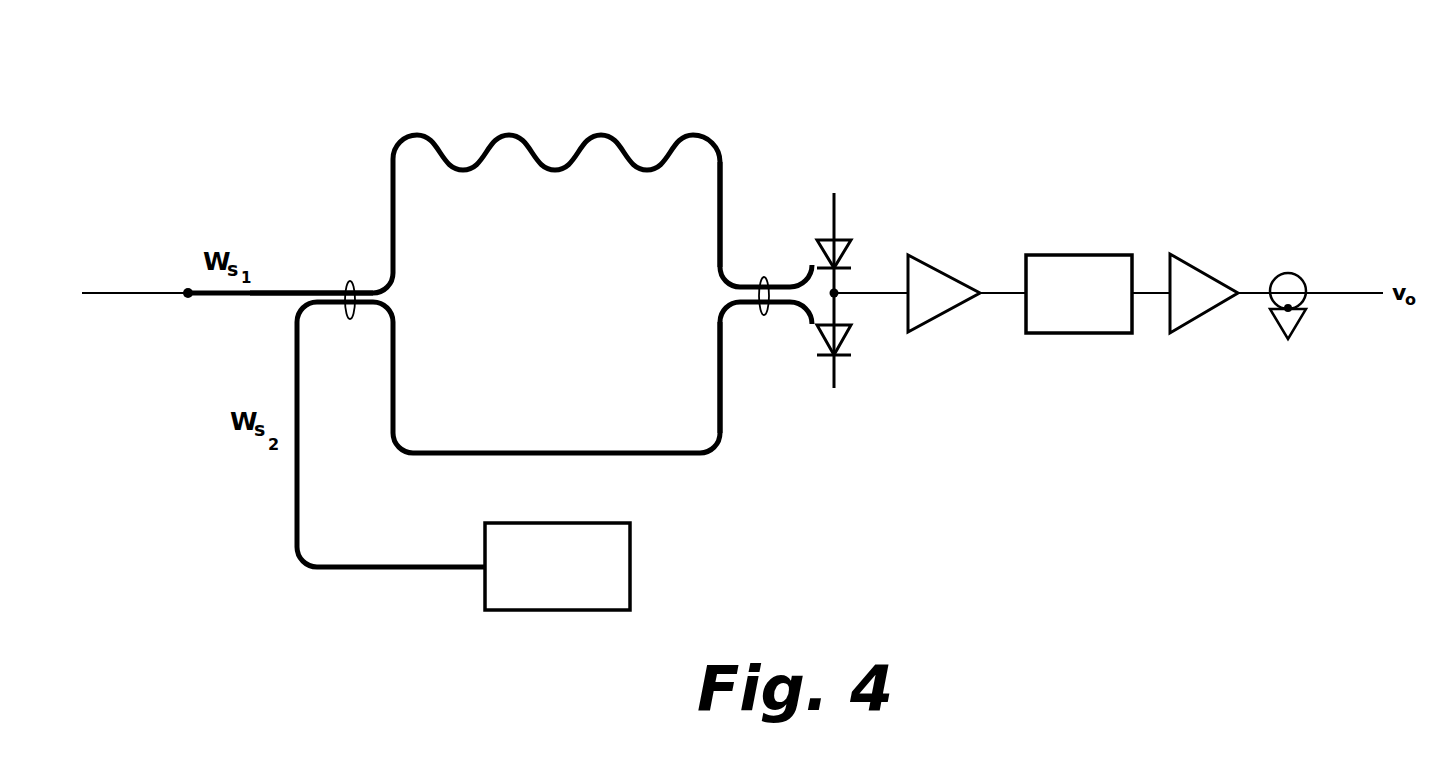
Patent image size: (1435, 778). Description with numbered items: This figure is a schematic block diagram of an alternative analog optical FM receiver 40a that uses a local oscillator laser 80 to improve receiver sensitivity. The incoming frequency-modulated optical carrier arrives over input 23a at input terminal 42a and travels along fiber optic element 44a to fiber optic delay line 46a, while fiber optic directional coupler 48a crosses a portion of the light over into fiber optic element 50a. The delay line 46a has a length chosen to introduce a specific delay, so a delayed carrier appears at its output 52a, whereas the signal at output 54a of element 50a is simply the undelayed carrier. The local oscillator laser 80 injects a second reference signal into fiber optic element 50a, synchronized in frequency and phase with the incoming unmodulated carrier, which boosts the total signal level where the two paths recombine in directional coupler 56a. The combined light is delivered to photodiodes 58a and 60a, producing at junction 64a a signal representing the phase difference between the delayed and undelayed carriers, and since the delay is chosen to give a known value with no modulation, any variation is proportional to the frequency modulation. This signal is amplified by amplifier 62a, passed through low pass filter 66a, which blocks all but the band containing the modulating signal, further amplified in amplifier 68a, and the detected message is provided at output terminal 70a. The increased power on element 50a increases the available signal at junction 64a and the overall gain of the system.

The analog optical FM receiver 40a is at (1024, 78).
The input optical fiber 23a is at (129, 291).
The input terminal 42a is at (191, 298).
The fiber optic element 44a is at (297, 290).
The fiber optic delay line 46a is at (433, 137).
The fiber optic directional coupler 48a is at (350, 319).
The fiber optic element 50a is at (593, 455).
The output of delay line 52a is at (723, 200).
The output of fiber optic element 54a is at (722, 383).
The directional coupler 56a is at (764, 278).
The photodiode 58a is at (855, 248).
The photodiode 60a is at (848, 333).
The amplifier 62a is at (945, 272).
The junction 64a is at (838, 291).
The low pass filter 66a is at (1085, 253).
The amplifier 68a is at (1197, 265).
The output terminal 70a is at (1305, 282).
The local oscillator laser 80 is at (630, 558).